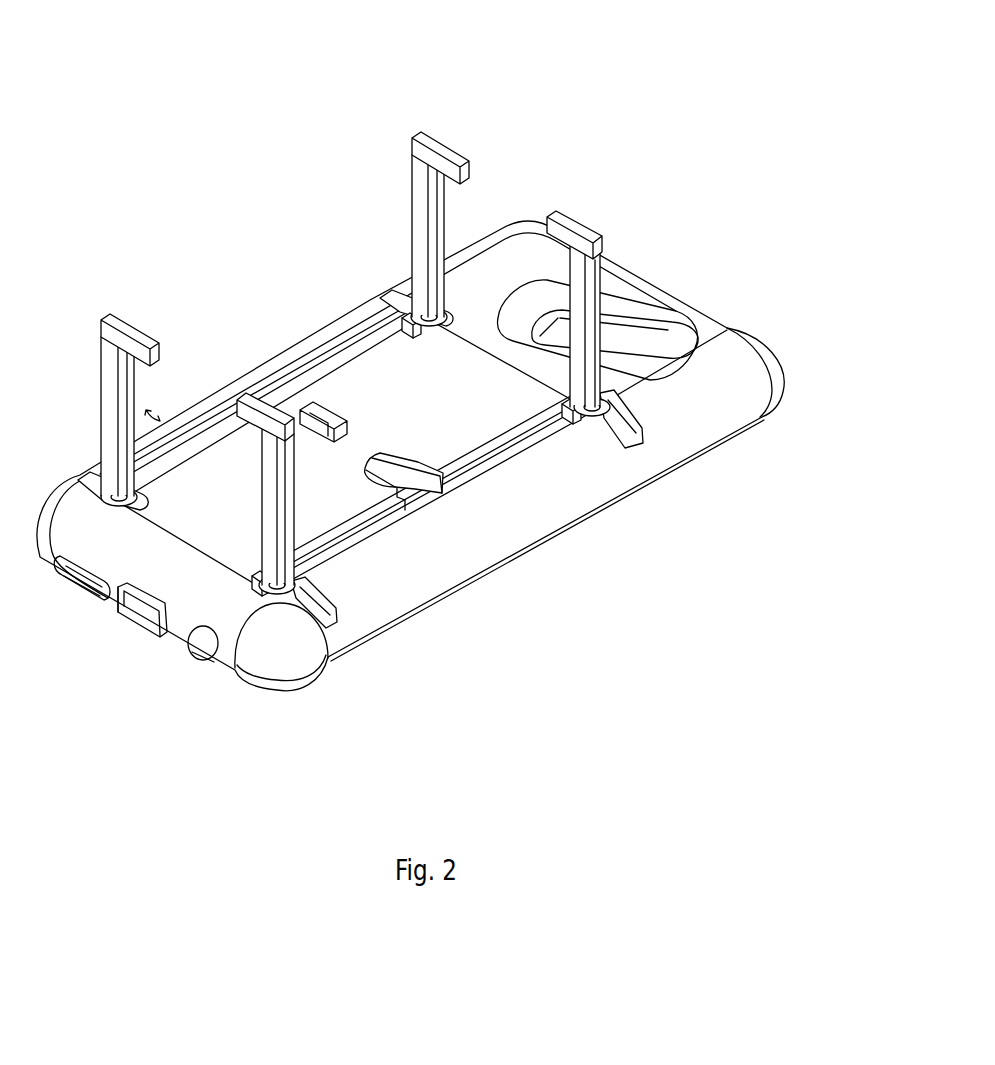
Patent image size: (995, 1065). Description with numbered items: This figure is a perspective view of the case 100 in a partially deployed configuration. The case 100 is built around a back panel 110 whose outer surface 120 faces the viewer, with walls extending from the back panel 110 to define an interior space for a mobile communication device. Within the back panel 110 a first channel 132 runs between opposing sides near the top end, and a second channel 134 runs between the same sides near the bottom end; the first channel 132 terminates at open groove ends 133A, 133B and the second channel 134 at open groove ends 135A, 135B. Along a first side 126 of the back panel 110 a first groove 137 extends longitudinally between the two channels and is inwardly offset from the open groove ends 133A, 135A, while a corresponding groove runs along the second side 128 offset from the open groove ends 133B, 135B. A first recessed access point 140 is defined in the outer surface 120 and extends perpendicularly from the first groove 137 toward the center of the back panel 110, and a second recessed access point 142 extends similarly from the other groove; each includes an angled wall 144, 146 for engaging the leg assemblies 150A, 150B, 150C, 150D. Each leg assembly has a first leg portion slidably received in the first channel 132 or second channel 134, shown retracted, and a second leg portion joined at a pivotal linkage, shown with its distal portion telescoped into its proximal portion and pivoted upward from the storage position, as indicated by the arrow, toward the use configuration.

The case 100 is at (417, 375).
The back panel 110 is at (530, 262).
The outer surface 120 is at (358, 490).
The first side 126 is at (547, 508).
The second side 128 is at (250, 373).
The first channel 132 is at (398, 302).
The open groove end 133A is at (637, 443).
The open groove end 133B is at (393, 296).
The second channel 134 is at (262, 575).
The open groove end 135A is at (327, 623).
The open groove end 135B is at (82, 473).
The first groove 137 is at (392, 541).
The first recessed access point 140 is at (421, 446).
The second recessed access point 142 is at (355, 419).
The angled wall 144 is at (385, 475).
The angled wall 146 is at (327, 433).
The leg assembly 150A is at (420, 117).
The leg assembly 150B is at (612, 217).
The leg assembly 150C is at (309, 528).
The leg assembly 150D is at (103, 290).